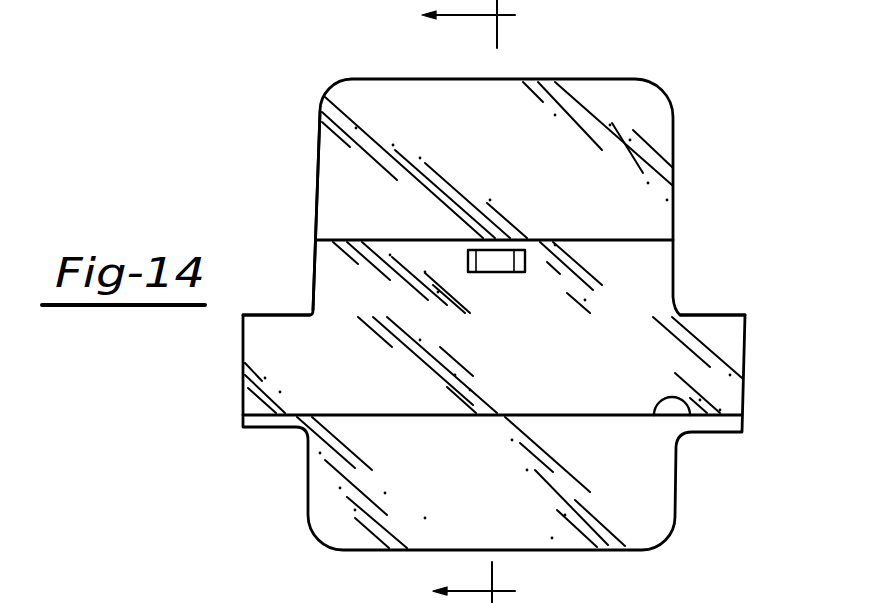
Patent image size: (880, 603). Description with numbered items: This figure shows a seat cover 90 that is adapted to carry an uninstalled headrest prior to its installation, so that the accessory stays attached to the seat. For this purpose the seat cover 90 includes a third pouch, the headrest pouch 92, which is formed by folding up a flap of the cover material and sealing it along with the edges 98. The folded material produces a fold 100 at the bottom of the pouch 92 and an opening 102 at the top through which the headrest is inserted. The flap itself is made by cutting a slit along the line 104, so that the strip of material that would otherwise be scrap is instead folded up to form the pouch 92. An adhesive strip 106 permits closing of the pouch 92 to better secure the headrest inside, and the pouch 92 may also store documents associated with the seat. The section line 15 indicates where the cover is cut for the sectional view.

The section line 15 is at (491, 301).
The seat cover 90 is at (680, 116).
The headrest pouch 92 is at (647, 280).
The edges 98 is at (318, 198).
The fold 100 is at (552, 318).
The opening 102 is at (622, 240).
The slit line 104 is at (690, 415).
The adhesive strip 106 is at (498, 263).